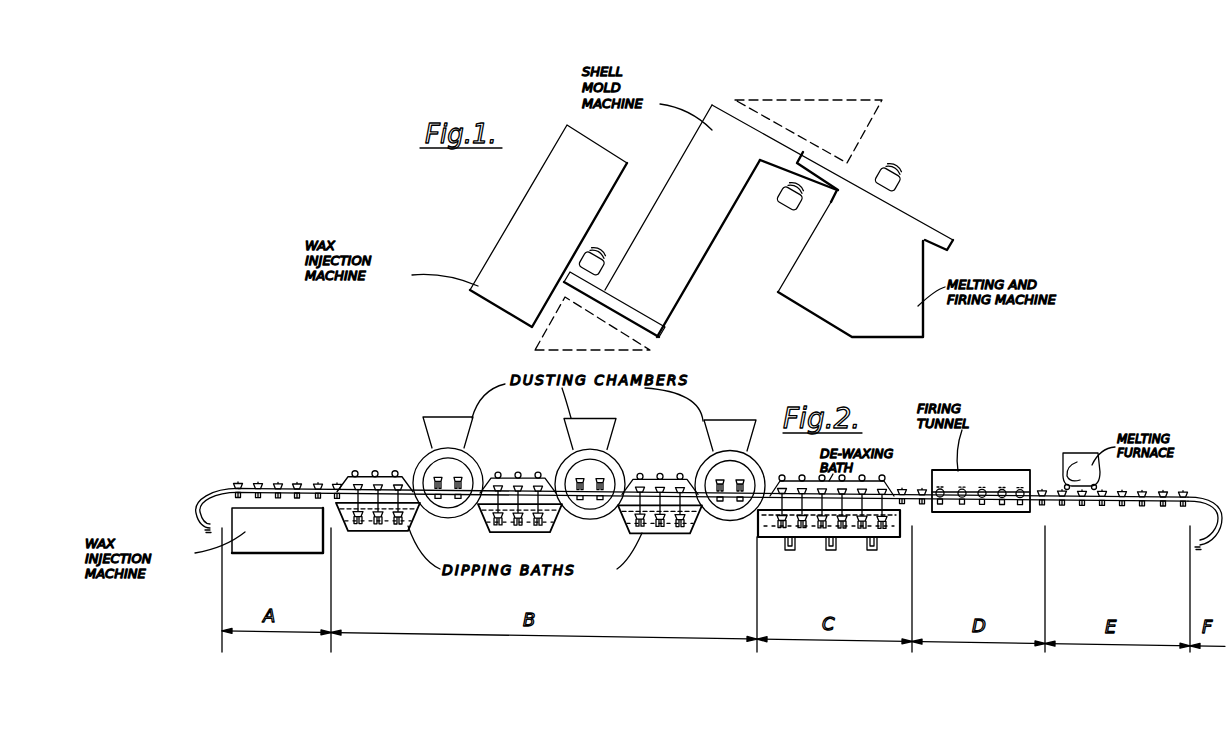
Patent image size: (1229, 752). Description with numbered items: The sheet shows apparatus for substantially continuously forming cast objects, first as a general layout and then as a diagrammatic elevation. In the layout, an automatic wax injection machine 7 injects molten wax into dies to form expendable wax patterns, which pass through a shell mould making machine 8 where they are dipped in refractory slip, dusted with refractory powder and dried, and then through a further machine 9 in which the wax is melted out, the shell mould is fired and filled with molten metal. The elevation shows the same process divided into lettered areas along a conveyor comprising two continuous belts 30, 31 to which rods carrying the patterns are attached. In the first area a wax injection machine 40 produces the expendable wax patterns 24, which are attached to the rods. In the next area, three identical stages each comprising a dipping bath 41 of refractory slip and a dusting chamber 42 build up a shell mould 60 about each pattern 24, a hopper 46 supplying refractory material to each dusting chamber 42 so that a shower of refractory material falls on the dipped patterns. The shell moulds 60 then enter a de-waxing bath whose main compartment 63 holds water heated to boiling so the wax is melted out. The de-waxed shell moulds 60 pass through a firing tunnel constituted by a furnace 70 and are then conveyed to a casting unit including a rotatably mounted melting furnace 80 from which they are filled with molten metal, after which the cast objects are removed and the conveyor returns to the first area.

In FIG. 1, the automatic wax injection machine 7 is at (523, 211).
In FIG. 1, the shell mould making machine 8 is at (710, 239).
In FIG. 1, the further machine 9 is at (822, 230).
In FIG. 2, the expendable wax pattern 24 is at (436, 477).
In FIG. 2, the continuous belt 30 is at (709, 503).
In FIG. 2, the continuous belt 31 is at (232, 487).
In FIG. 2, the wax injection machine 40 is at (291, 546).
In FIG. 2, the dipping bath 41 is at (390, 526).
In FIG. 2, the dusting chamber 42 is at (590, 454).
In FIG. 2, the hopper 46 is at (447, 423).
In FIG. 2, the shell mould 60 is at (862, 528).
In FIG. 2, the main compartment 63 is at (823, 532).
In FIG. 2, the furnace 70 is at (975, 473).
In FIG. 2, the melting furnace 80 is at (1083, 453).